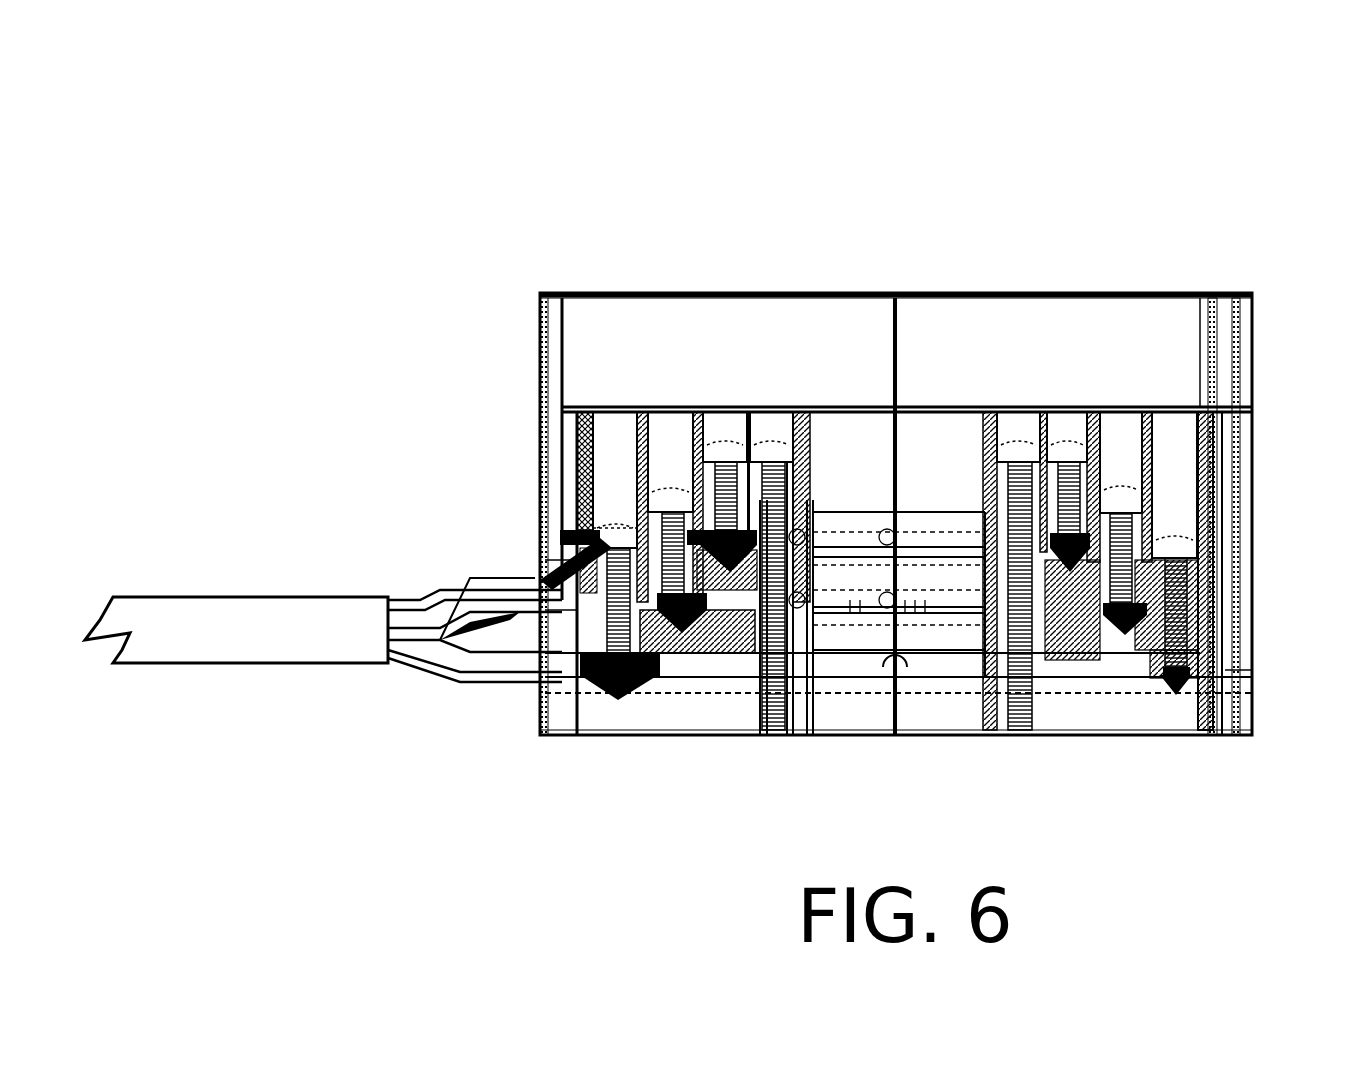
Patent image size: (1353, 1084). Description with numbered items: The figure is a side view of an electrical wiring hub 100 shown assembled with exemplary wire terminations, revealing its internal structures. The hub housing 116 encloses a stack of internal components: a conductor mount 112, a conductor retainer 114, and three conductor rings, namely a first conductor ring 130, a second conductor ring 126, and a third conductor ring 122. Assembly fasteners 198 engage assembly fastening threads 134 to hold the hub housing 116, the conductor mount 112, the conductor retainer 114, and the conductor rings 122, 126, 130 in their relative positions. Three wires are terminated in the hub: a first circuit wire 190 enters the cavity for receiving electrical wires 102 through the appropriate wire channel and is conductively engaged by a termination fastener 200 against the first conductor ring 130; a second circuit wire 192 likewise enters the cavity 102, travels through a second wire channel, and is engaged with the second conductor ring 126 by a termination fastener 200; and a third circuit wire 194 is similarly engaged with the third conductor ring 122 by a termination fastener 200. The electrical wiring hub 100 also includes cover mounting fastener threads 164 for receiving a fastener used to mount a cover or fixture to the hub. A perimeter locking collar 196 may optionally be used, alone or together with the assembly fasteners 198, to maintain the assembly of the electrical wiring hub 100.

The electrical wiring hub 100 is at (1181, 124).
The cavity for receiving electrical wires 102 is at (540, 525).
The conductor mount 112 is at (712, 640).
The conductor retainer 114 is at (586, 410).
The hub housing 116 is at (605, 294).
The third conductor ring 122 is at (1186, 693).
The second conductor ring 126 is at (1133, 655).
The first conductor ring 130 is at (1085, 660).
The assembly fastening threads 134 is at (999, 735).
The cover mounting fastener threads 164 is at (1237, 294).
The first circuit wire 190 is at (527, 567).
The second circuit wire 192 is at (405, 618).
The third circuit wire 194 is at (443, 658).
The perimeter locking collar 196 is at (1209, 294).
The assembly fasteners 198 is at (770, 458).
The termination fastener 200 is at (725, 442).